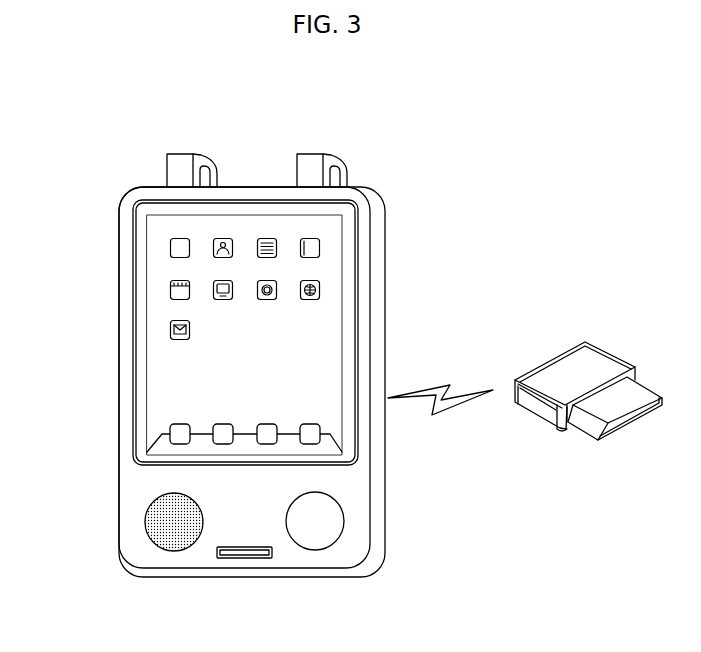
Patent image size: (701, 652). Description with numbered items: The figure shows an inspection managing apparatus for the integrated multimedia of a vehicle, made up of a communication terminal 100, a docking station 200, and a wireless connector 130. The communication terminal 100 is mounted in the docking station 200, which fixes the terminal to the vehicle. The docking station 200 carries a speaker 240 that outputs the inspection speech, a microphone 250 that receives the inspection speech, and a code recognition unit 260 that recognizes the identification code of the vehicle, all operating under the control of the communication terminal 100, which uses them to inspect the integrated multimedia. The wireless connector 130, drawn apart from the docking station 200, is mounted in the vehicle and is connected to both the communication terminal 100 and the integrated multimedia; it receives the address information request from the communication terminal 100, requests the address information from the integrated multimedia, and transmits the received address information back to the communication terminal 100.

The docking station 200 is at (100, 266).
The communication terminal 100 is at (353, 206).
The wireless connector 130 is at (583, 343).
The speaker 240 is at (147, 525).
The microphone 250 is at (338, 518).
The code recognition unit 260 is at (243, 558).